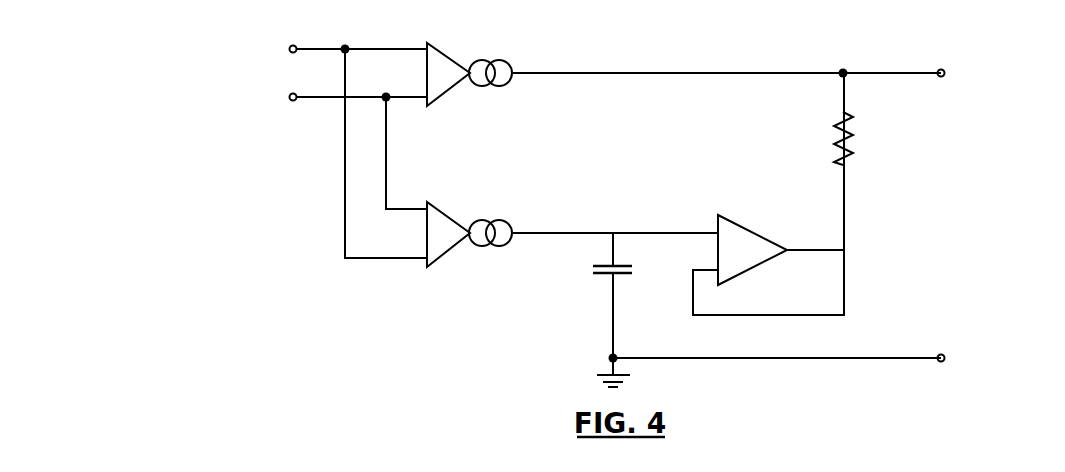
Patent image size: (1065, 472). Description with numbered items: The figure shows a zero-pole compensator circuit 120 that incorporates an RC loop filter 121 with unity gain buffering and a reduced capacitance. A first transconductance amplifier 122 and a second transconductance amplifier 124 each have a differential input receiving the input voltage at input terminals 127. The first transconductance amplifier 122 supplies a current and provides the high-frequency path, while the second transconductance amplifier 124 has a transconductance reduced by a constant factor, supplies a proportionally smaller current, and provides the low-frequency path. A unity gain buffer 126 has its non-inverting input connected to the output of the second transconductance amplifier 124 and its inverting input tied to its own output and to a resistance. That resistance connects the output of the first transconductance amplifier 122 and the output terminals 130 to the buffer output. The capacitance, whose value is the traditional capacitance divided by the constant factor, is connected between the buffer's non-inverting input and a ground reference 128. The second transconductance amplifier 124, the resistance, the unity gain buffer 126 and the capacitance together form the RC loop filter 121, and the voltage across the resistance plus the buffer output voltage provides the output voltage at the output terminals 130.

The zero-pole compensator circuit 120 is at (200, 67).
The RC loop filter 121 is at (860, 49).
The first transconductance amplifier 122 is at (465, 57).
The second transconductance amplifier 124 is at (465, 216).
The unity gain buffer 126 is at (762, 233).
The input terminals 127 is at (295, 54).
The ground reference 128 is at (602, 373).
The output terminals 130 is at (945, 354).